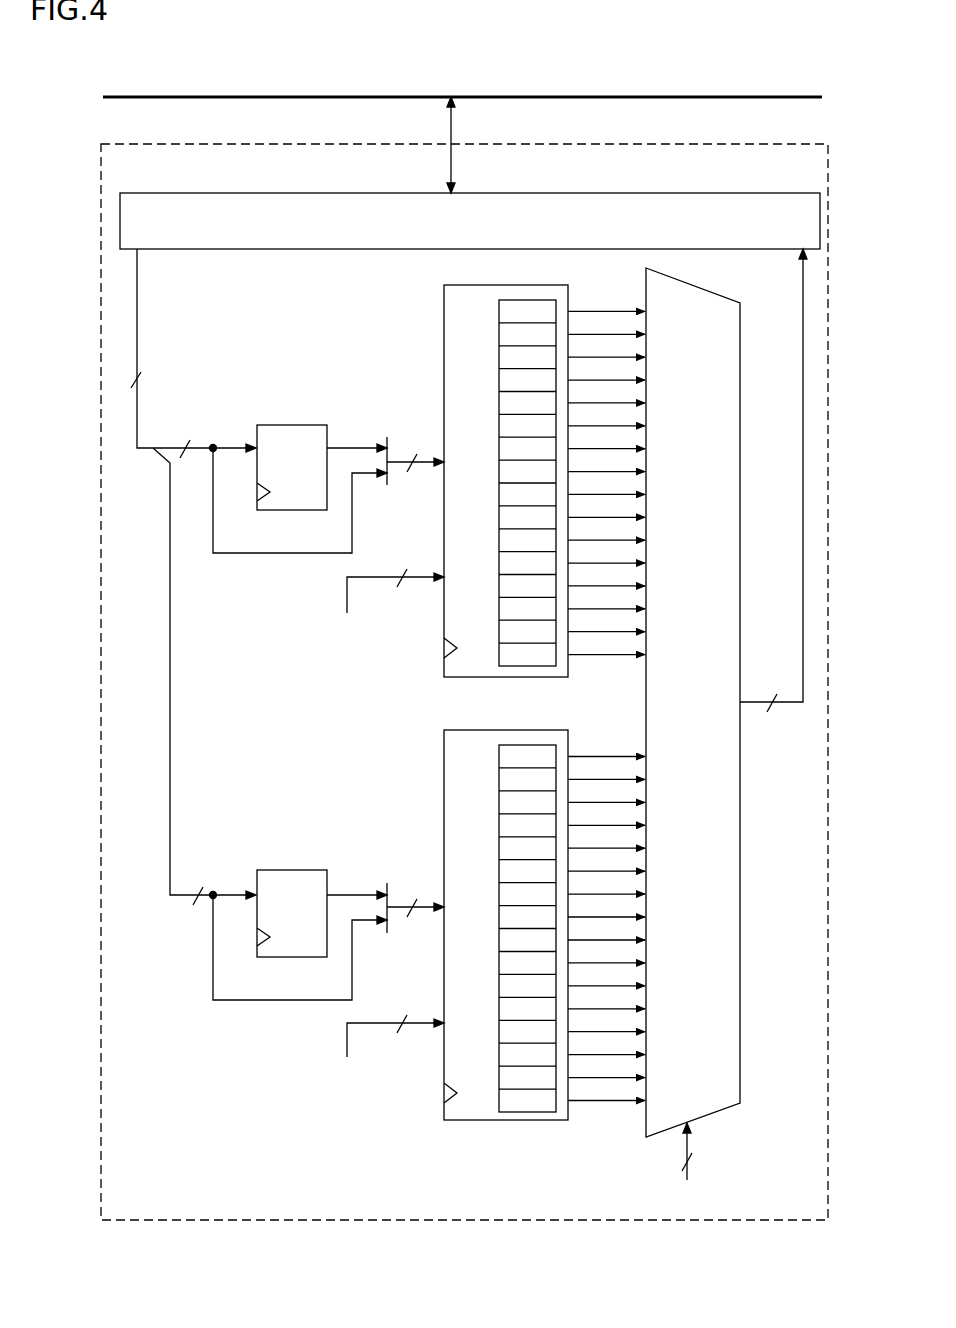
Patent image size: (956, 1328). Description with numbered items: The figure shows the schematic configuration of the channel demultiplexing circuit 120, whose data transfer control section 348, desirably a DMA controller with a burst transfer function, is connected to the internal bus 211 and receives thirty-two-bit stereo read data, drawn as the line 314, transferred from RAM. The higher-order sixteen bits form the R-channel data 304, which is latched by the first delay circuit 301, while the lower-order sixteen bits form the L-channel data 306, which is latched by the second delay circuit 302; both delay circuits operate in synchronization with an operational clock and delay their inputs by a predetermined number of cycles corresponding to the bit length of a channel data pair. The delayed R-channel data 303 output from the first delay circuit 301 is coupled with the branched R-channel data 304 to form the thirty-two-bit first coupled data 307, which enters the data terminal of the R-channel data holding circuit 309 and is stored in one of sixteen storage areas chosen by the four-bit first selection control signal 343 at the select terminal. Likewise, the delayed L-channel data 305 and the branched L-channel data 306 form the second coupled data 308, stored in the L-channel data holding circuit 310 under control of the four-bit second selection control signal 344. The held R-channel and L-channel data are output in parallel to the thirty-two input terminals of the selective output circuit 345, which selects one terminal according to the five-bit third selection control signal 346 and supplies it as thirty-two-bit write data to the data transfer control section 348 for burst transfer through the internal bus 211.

The internal bus 211 is at (790, 97).
The channel demultiplexing circuit 120 is at (733, 144).
The data transfer control section 348 is at (635, 193).
The read data line RD[31:0] 314 is at (137, 332).
The L-channel data 306 is at (170, 766).
The first delay circuit 301 is at (292, 425).
The second delay circuit 302 is at (292, 870).
The delayed R-channel data 303 is at (353, 445).
The delayed L-channel data 305 is at (355, 890).
The R-channel data 304 is at (243, 553).
The first coupled data 307 is at (396, 455).
The second coupled data 308 is at (396, 900).
The R-channel data holding circuit 309 is at (484, 677).
The L-channel data holding circuit 310 is at (484, 1120).
The first selection control signal 343 is at (383, 577).
The second selection control signal 344 is at (383, 1020).
The selective output circuit 345 is at (741, 960).
The third selection control signal 346 is at (691, 1130).